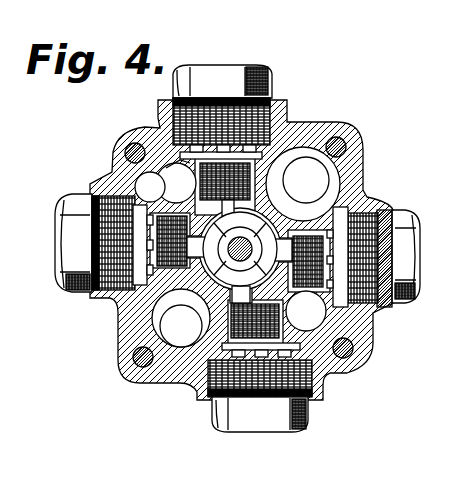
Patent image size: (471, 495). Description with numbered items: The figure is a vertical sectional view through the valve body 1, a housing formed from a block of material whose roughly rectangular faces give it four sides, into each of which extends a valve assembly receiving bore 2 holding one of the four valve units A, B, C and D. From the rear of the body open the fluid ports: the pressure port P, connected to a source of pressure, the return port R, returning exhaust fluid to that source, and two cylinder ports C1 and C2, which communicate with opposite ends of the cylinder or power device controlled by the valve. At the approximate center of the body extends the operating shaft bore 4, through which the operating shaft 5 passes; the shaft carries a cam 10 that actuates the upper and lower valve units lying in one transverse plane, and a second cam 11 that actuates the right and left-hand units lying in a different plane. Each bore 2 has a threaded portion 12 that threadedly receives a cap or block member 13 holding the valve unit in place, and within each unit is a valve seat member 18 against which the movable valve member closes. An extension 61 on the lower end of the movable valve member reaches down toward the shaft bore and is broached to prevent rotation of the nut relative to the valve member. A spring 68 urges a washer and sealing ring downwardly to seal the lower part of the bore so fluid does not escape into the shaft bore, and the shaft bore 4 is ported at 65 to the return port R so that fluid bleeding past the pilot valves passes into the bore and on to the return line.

The valve body 1 is at (365, 123).
The valve assembly receiving bore 2 is at (350, 210).
The operating shaft bore 4 is at (212, 272).
The operating shaft 5 is at (214, 274).
The cam 10 is at (252, 231).
The second cam 11 is at (306, 180).
The threaded portion 12 is at (290, 104).
The cap or block member 13 is at (424, 288).
The valve seat member 18 is at (170, 145).
The extension 61 is at (152, 186).
The port 65 is at (330, 323).
The spring 68 is at (236, 323).
The valve unit A is at (242, 95).
The valve unit B is at (309, 300).
The valve unit C is at (241, 436).
The valve unit D is at (52, 238).
The pressure port P is at (156, 182).
The return port R is at (373, 330).
The cylinder port C1 is at (310, 163).
The cylinder port C2 is at (158, 340).